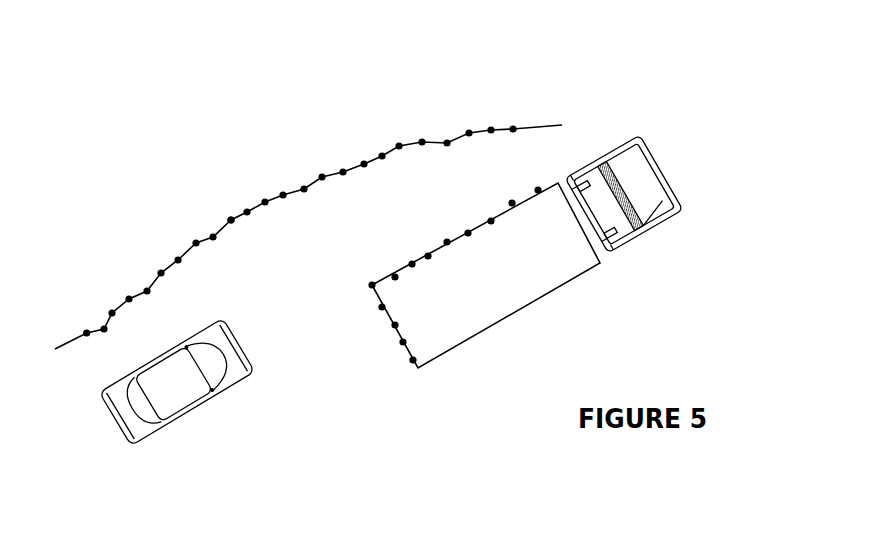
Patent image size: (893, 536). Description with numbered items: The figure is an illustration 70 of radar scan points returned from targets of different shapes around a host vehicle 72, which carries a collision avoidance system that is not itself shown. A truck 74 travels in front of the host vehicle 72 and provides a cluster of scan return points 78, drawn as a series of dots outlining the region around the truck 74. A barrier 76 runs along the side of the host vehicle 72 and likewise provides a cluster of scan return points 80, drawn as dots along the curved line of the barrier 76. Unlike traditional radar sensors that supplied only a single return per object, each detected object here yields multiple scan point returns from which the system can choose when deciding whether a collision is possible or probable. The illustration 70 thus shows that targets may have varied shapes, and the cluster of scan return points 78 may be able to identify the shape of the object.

The illustration 70 is at (337, 62).
The host vehicle 72 is at (112, 437).
The truck 74 is at (667, 167).
The barrier 76 is at (545, 125).
The cluster of scan return points 78 is at (395, 325).
The cluster of scan return points 80 is at (231, 213).